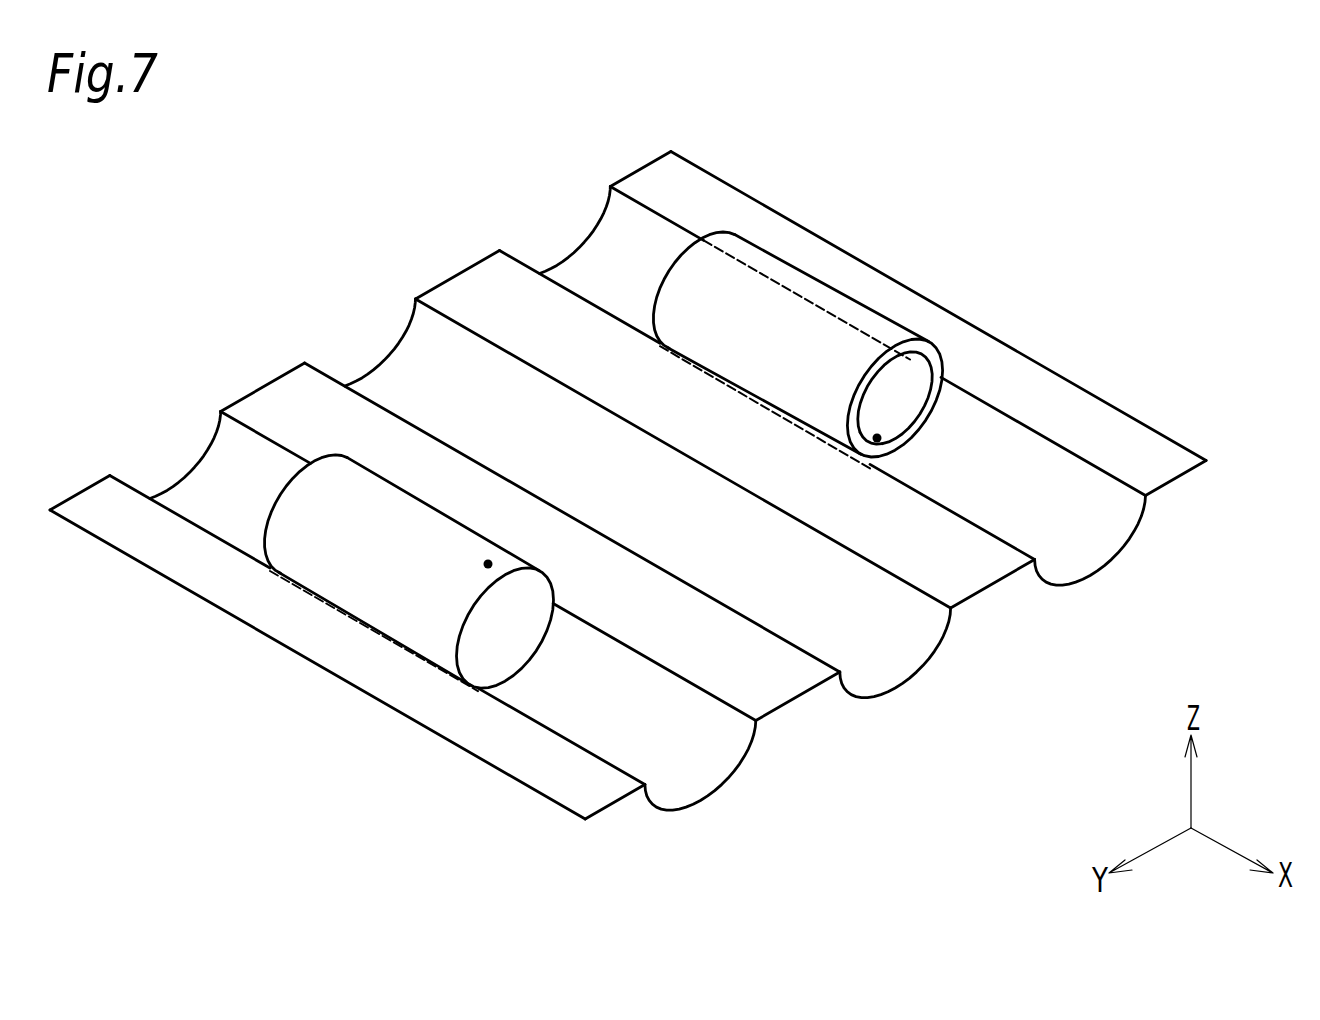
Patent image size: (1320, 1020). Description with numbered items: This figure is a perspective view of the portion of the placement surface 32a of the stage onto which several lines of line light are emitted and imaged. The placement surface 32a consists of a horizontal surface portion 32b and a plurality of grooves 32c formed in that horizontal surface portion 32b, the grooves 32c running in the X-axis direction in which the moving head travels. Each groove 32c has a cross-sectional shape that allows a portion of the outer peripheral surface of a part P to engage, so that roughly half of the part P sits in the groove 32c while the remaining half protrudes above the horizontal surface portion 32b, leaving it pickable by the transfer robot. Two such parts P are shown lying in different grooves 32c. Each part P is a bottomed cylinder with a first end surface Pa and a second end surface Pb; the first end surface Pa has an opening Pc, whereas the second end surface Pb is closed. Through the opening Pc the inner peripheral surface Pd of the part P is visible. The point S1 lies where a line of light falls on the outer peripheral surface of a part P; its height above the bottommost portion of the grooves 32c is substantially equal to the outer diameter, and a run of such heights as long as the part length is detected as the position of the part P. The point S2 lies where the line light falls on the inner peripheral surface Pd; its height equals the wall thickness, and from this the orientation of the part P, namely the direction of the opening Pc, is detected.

The placement surface 32a is at (628, 467).
The horizontal surface portion 32b is at (725, 202).
The groove 32c is at (580, 273).
The part P is at (632, 451).
The first end surface Pa is at (927, 423).
The second end surface Pb is at (520, 648).
The opening Pc is at (900, 407).
The inner peripheral surface Pd is at (897, 437).
The point on line light portion on outer peripheral surface S1 is at (488, 553).
The point on line light portion on inner peripheral surface S2 is at (886, 432).